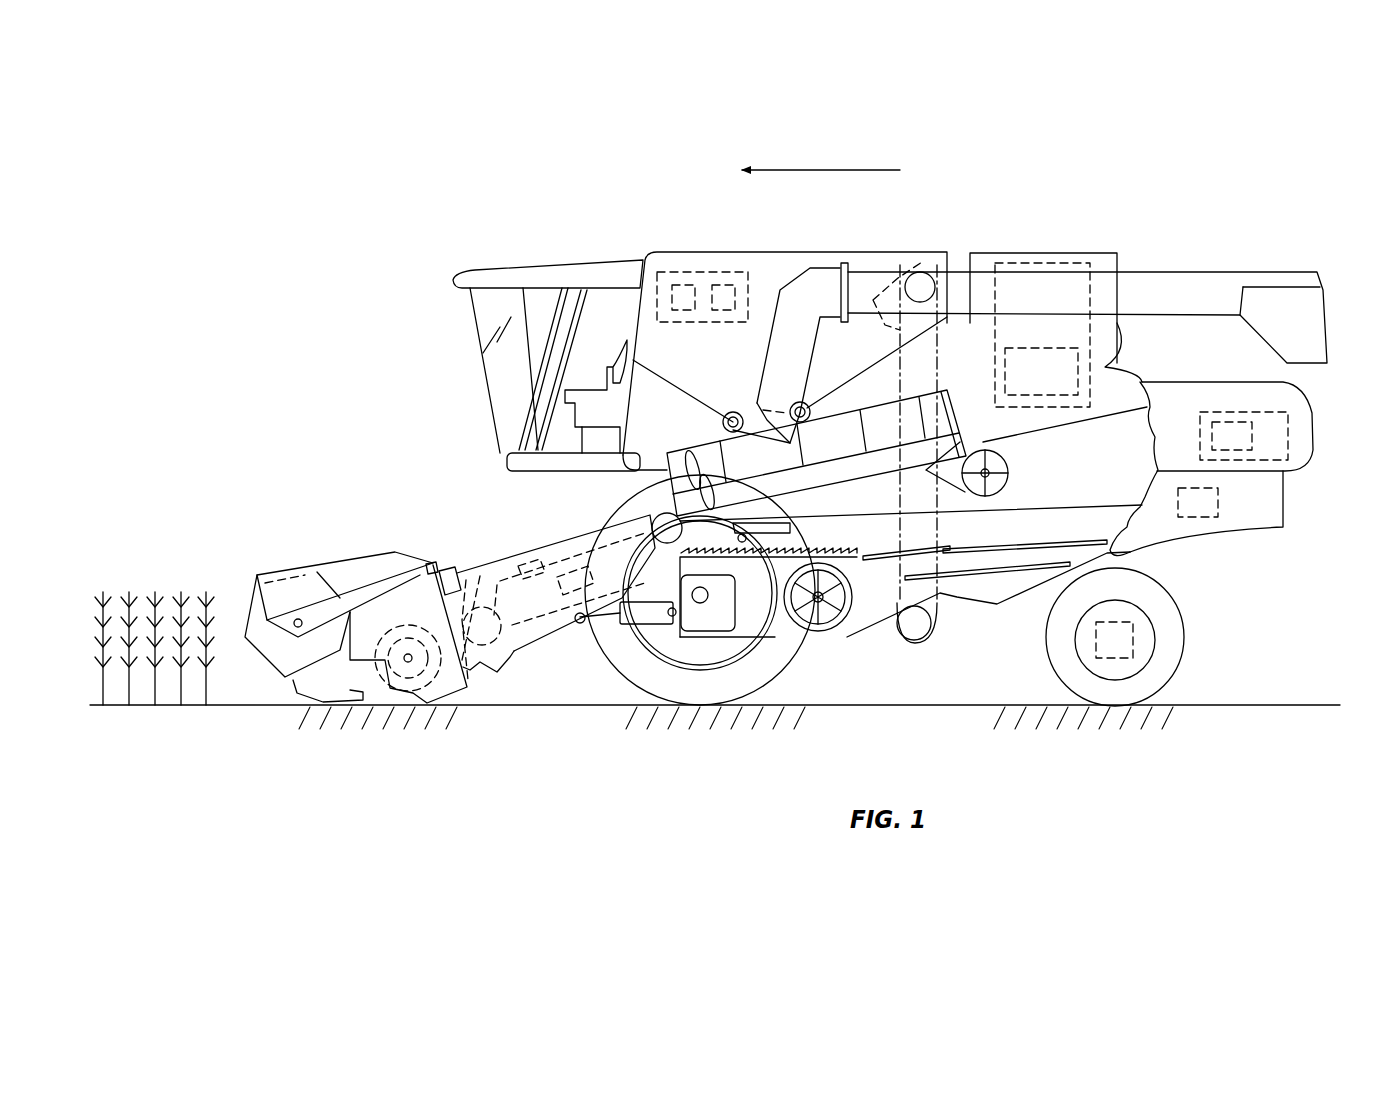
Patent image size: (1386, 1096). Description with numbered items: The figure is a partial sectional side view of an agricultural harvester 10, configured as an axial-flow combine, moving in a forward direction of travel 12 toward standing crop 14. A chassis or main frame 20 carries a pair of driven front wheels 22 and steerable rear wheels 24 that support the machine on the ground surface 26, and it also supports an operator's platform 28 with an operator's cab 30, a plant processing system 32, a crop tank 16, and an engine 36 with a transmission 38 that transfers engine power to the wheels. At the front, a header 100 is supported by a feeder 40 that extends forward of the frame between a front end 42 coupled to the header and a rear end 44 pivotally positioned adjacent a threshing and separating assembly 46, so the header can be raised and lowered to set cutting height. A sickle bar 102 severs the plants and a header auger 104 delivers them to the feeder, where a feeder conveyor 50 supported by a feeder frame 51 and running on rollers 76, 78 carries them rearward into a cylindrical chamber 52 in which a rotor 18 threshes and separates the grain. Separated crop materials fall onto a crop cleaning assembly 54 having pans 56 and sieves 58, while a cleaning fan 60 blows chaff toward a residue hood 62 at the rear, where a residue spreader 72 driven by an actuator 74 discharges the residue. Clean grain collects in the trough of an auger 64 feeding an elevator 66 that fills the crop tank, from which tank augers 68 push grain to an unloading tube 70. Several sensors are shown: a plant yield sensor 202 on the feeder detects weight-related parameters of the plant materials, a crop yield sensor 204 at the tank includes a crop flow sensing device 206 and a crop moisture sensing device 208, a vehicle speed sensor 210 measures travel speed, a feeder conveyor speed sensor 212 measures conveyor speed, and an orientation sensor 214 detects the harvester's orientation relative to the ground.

The agricultural harvester 10 is at (507, 220).
The direction of travel 12 is at (840, 170).
The standing crop 14 is at (168, 587).
The crop tank 16 is at (733, 252).
The rotor 18 is at (700, 455).
The chassis or main frame 20 is at (1130, 555).
The front wheels 22 is at (643, 673).
The rear wheels 24 is at (1182, 645).
The ground surface 26 is at (1210, 707).
The operator's platform 28 is at (517, 465).
The operator's cab 30 is at (497, 367).
The plant processing system 32 is at (1037, 493).
The engine 36 is at (1022, 262).
The transmission 38 is at (1050, 350).
The feeder 40 is at (488, 542).
The front end of the feeder 42 is at (433, 613).
The rear end of the feeder 44 is at (643, 483).
The threshing and separating assembly 46 is at (842, 447).
The feeder conveyor 50 is at (557, 620).
The feeder frame 51 is at (490, 567).
The cylindrical chamber 52 is at (820, 483).
The crop cleaning assembly 54 is at (880, 647).
The pans 56 is at (833, 557).
The sieves 58 is at (950, 553).
The cleaning fan 60 is at (818, 634).
The residue hood 62 is at (1303, 443).
The auger 64 is at (930, 637).
The elevator 66 is at (940, 350).
The tank augers 68 is at (740, 413).
The unloading tube 70 is at (1170, 285).
The residue spreader 72 is at (1278, 412).
The actuator 74 is at (1237, 420).
The roller of the feeder conveyor 76 is at (512, 645).
The roller of the feeder conveyor 78 is at (624, 505).
The header 100 is at (293, 560).
The sickle bar 102 is at (315, 685).
The header auger 104 is at (420, 690).
The plant yield sensor 202 is at (563, 567).
The crop yield sensor 204 is at (655, 277).
The crop flow sensing device 206 is at (683, 283).
The crop moisture sensing device 208 is at (722, 283).
The vehicle speed sensor 210 is at (1117, 660).
The feeder conveyor speed sensor 212 is at (510, 630).
The orientation sensor 214 is at (1220, 503).